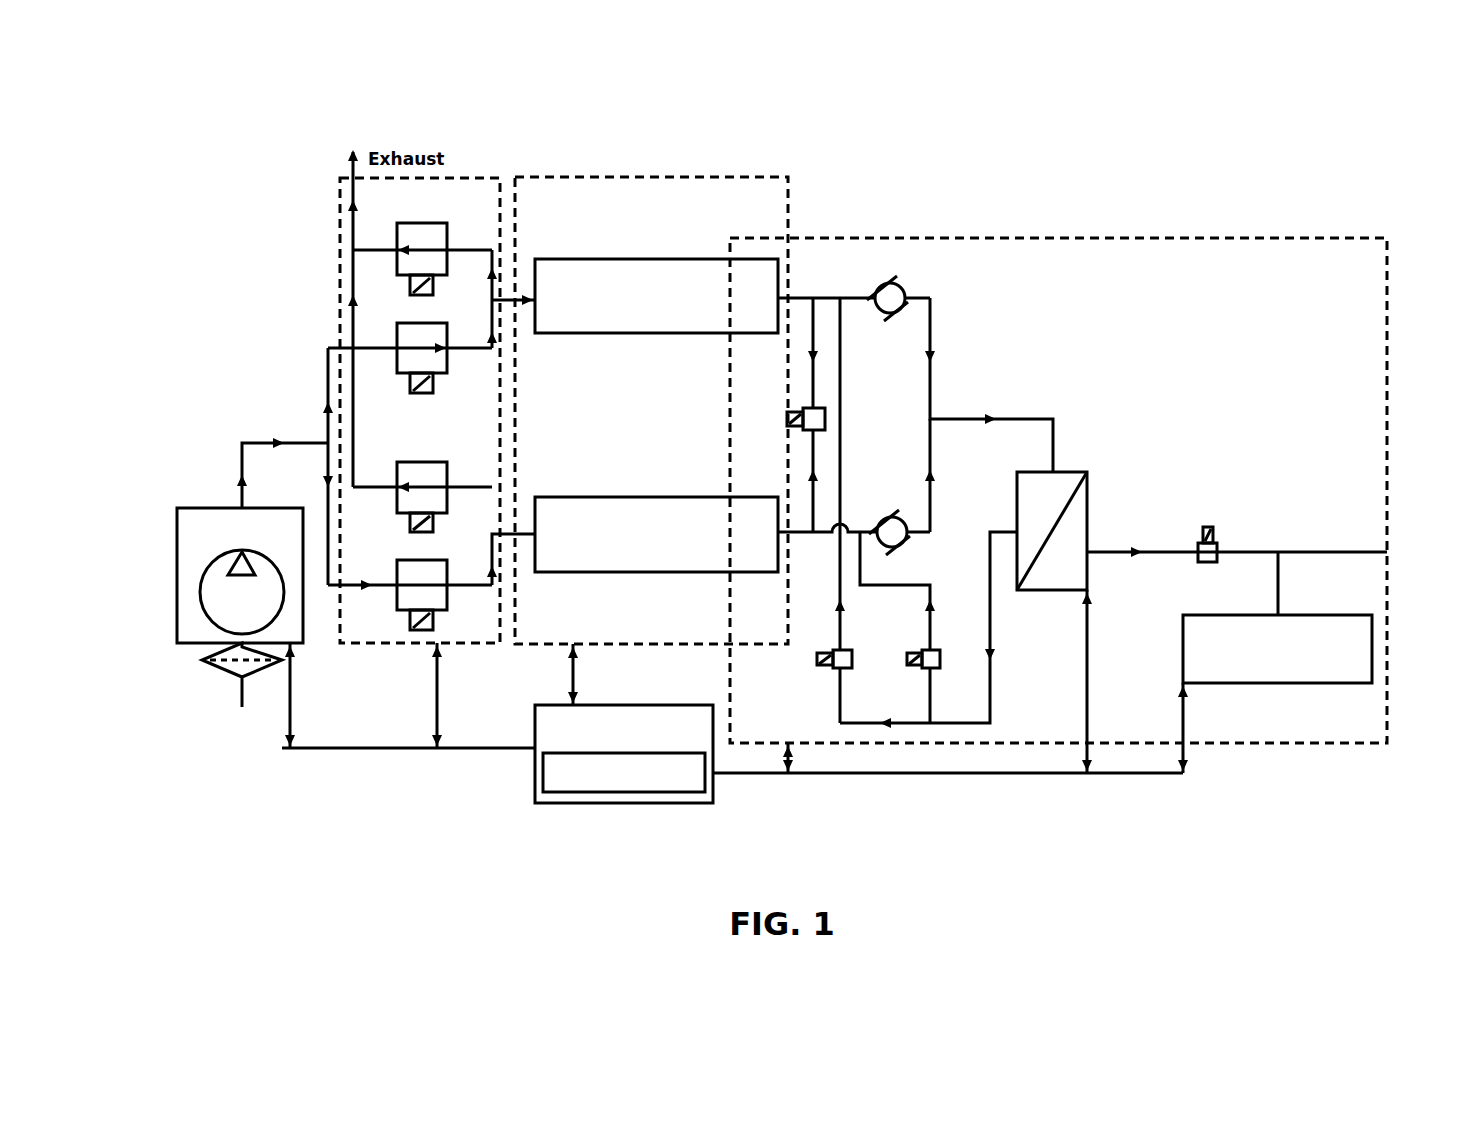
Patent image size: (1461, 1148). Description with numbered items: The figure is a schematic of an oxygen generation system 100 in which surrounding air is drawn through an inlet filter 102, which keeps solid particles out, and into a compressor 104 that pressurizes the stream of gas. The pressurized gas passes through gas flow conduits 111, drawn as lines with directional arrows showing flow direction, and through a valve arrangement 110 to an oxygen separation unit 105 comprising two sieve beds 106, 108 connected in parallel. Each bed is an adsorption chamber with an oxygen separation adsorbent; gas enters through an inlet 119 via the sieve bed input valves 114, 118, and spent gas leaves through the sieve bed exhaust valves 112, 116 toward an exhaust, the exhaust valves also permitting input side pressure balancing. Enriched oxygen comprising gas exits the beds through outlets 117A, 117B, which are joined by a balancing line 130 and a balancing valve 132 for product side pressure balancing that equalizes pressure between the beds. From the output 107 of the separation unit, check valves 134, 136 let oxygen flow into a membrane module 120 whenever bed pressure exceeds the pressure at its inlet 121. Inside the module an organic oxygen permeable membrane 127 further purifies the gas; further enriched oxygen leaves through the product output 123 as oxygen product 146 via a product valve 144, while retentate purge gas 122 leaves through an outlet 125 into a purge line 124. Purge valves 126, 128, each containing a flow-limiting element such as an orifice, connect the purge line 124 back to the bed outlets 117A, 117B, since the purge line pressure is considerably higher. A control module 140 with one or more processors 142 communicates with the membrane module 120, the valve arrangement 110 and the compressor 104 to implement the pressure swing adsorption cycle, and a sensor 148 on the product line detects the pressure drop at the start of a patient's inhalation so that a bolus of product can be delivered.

The oxygen generation system 100 is at (1180, 145).
The inlet filter 102 is at (222, 677).
The compressor 104 is at (252, 540).
The oxygen separation unit 105 is at (573, 172).
The sieve bed 106 is at (656, 534).
The output of oxygen separation unit 107 is at (922, 419).
The sieve bed 108 is at (656, 296).
The valve arrangement 110 is at (836, 460).
The gas flow conduits 111 is at (322, 382).
The sieve bed exhaust valve 112 is at (422, 259).
The sieve bed input valve 114 is at (410, 358).
The sieve bed exhaust valve 116 is at (422, 497).
The sieve bed input valve 118 is at (410, 595).
The inlet 119 is at (528, 522).
The outlet of adsorption chamber 117A is at (791, 540).
The product outlet of adsorption chamber 117B is at (791, 290).
The membrane module 120 is at (1095, 487).
The inlet of membrane module 121 is at (1043, 468).
The purge gas 122 is at (1001, 622).
The product output 123 is at (1092, 557).
The purge line 124 is at (833, 722).
The outlet at primary side of membrane module 125 is at (1010, 530).
The purge valve 126 is at (815, 657).
The membrane 127 is at (1054, 535).
The purge valve 128 is at (905, 648).
The balancing line 130 is at (735, 415).
The balancing valve 132 is at (790, 430).
The check valve 134 is at (906, 287).
The check valve 136 is at (902, 543).
The control module 140 is at (735, 696).
The processors 142 is at (624, 772).
The product valve 144 is at (1212, 521).
The oxygen product 146 is at (1367, 503).
The sensor 148 is at (1277, 617).